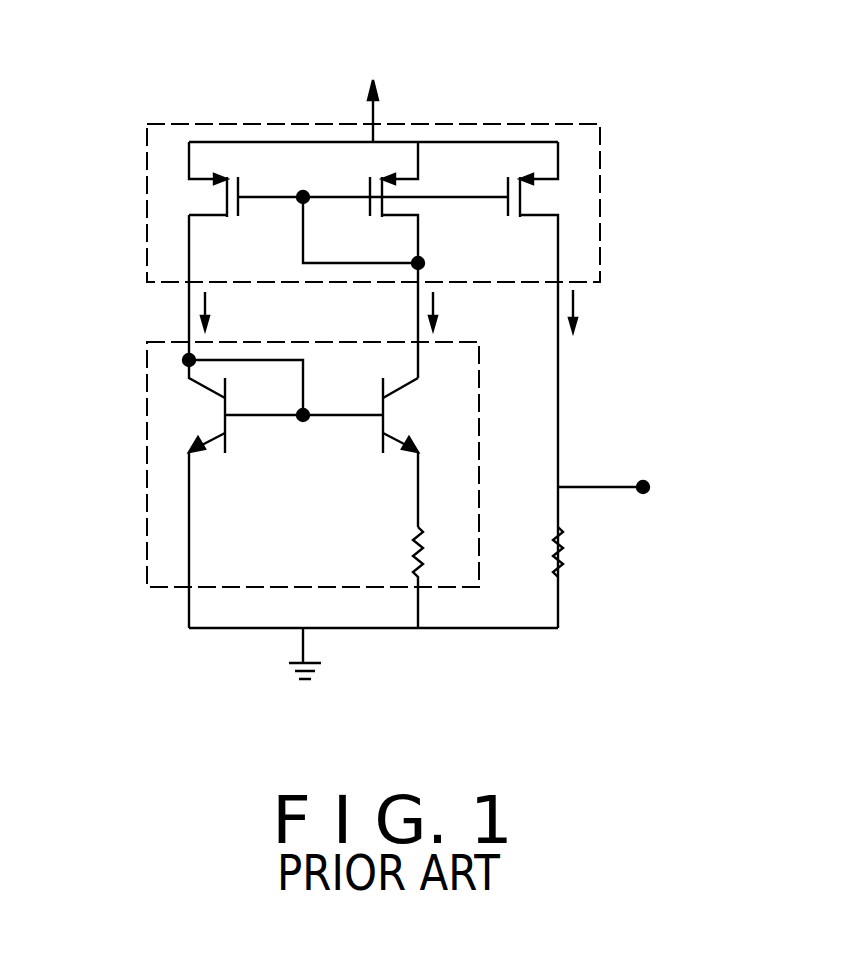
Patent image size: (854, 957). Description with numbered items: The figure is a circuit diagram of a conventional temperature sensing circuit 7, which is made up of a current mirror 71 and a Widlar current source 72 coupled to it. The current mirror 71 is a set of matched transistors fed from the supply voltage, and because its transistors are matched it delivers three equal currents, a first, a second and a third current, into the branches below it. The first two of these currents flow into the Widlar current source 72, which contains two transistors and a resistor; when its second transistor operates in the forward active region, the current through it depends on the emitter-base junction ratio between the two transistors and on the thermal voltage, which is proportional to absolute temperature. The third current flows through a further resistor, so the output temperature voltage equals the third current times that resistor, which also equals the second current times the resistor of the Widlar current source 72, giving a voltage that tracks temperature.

The temperature sensing circuit 7 is at (618, 115).
The current mirror 71 is at (588, 260).
The Widlar current source 72 is at (175, 532).